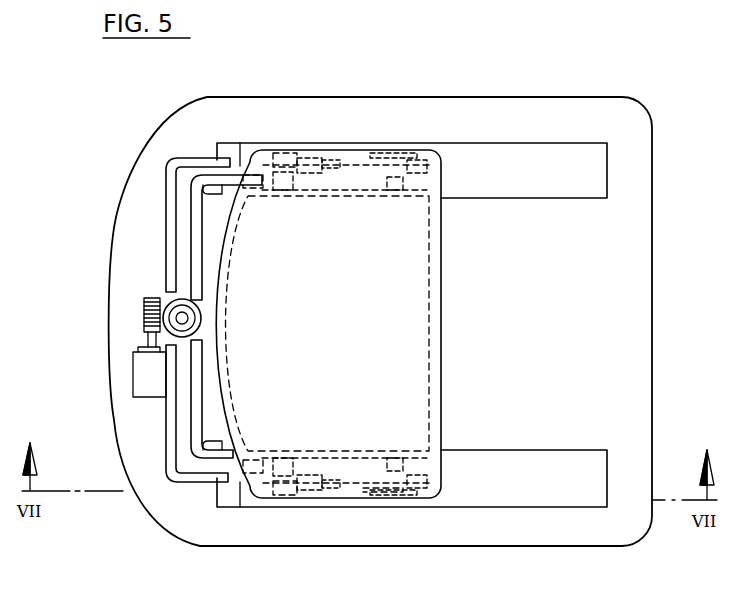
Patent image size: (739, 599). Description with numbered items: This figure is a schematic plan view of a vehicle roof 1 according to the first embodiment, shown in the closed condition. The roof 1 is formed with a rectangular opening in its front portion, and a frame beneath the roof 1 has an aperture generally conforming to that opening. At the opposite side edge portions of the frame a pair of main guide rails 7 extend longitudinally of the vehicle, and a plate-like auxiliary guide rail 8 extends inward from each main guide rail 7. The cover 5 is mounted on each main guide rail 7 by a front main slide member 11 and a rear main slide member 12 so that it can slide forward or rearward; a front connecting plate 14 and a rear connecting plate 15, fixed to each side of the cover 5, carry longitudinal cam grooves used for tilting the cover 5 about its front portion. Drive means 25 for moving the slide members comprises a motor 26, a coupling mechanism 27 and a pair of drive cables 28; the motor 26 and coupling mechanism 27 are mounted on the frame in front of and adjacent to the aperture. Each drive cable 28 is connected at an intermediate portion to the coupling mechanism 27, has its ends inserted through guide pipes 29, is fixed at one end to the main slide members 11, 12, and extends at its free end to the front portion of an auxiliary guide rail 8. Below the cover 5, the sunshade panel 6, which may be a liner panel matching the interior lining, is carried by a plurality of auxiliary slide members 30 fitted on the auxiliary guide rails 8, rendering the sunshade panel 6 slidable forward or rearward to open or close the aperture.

The vehicle roof 1 is at (652, 294).
The cover 5 is at (441, 288).
The sunshade panel 6 is at (431, 358).
The main guide rails 7 is at (254, 148).
The auxiliary guide rail 8 is at (220, 193).
The front main slide member 11 is at (337, 170).
The rear main slide member 12 is at (422, 160).
The front connecting plate 14 is at (308, 166).
The rear connecting plate 15 is at (390, 155).
The drive means 25 is at (133, 335).
The motor 26 is at (140, 381).
The coupling mechanism 27 is at (168, 302).
The drive cables 28 is at (240, 158).
The guide pipes 29 is at (196, 241).
The auxiliary slide members 30 is at (280, 174).